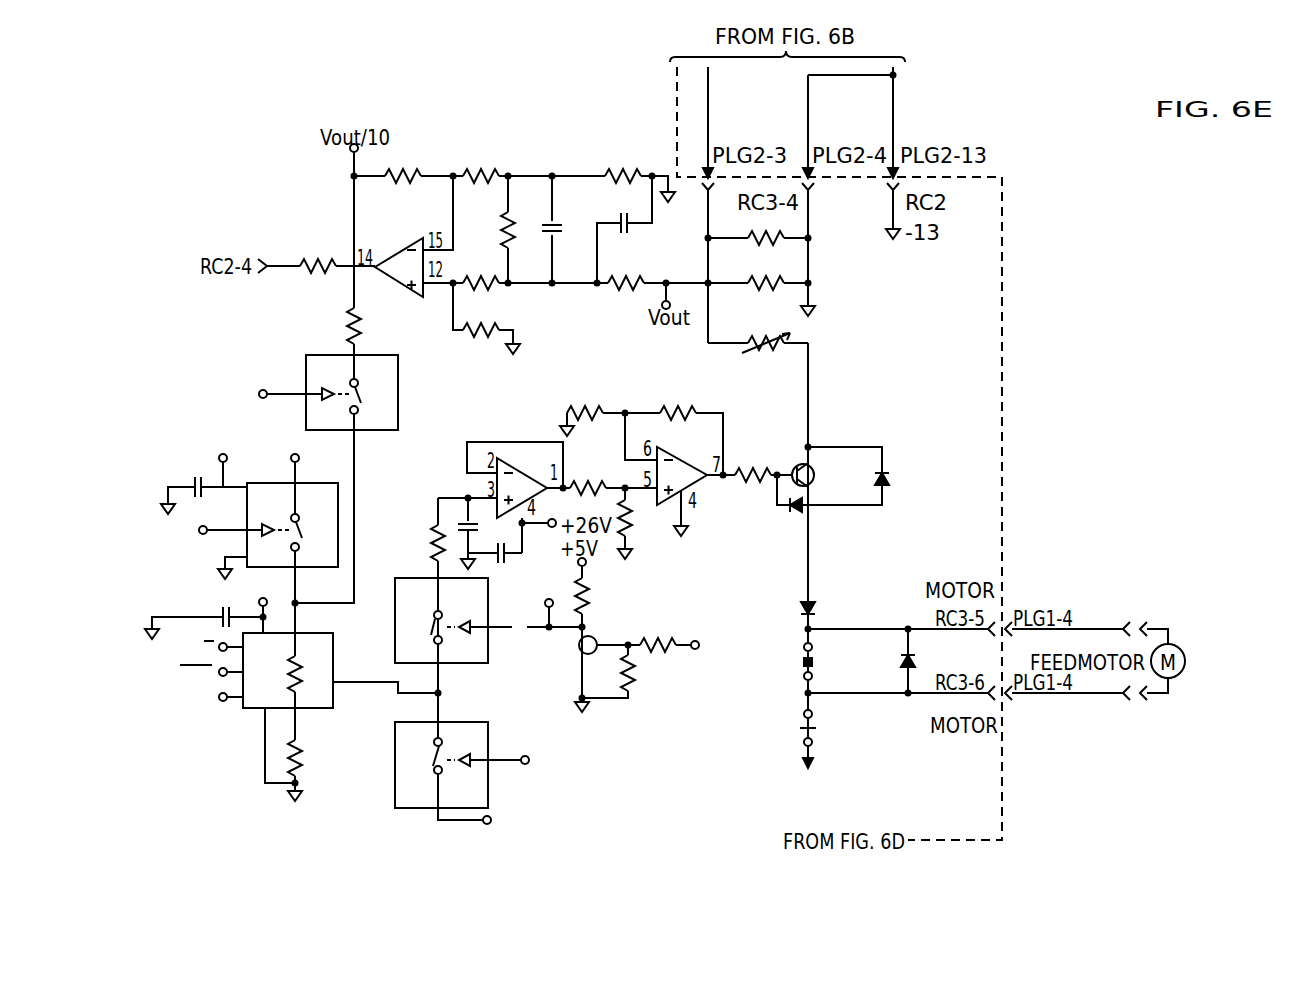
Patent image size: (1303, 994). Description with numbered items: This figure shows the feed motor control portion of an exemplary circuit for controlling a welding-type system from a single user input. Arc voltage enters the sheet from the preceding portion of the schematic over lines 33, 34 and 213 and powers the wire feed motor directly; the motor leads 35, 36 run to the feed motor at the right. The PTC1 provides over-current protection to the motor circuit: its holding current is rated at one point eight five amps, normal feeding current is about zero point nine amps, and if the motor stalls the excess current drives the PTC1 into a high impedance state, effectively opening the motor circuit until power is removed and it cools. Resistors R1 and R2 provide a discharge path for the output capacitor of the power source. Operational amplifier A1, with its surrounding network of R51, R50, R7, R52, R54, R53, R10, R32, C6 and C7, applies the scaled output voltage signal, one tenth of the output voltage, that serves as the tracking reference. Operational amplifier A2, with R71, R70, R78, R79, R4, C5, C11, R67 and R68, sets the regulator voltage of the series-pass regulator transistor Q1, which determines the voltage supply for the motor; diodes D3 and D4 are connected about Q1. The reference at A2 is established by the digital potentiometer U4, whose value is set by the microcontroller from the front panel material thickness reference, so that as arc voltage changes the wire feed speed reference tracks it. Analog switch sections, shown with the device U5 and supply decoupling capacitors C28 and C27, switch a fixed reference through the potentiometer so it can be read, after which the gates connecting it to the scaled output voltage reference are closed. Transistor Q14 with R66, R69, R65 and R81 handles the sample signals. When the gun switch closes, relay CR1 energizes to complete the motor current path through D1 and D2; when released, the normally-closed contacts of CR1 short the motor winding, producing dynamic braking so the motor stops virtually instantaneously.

The line 33 from FIG. 6B 33 is at (698, 122).
The line 34 from FIG. 6B 34 is at (836, 126).
The line 213 from FIG. 6B 213 is at (880, 122).
The feed motor lead 35 is at (1093, 625).
The feed motor lead 36 is at (1093, 704).
The resistor R51 is at (403, 164).
The resistor R50 is at (476, 164).
The resistor R7 is at (623, 164).
The resistor R52 is at (492, 229).
The capacitor C7 is at (566, 229).
The capacitor C6 is at (624, 229).
The resistor R10 is at (626, 271).
The resistor R54 is at (476, 295).
The resistor R53 is at (486, 322).
The resistor R32 is at (318, 255).
The resistor R68 is at (339, 326).
The operational amplifier A1 is at (461, 378).
The operational amplifier A2 is at (682, 491).
The capacitor C5 is at (481, 533).
The capacitor C11 is at (495, 555).
The resistor R71 is at (588, 480).
The resistor R70 is at (610, 412).
The resistor R78 is at (673, 432).
The resistor R79 is at (644, 523).
The resistor R4 is at (750, 467).
The series-pass regulator transistor Q1 is at (818, 477).
The diode D3 is at (896, 481).
The diode D4 is at (794, 521).
The diode D1 is at (823, 621).
The diode D2 is at (922, 661).
The relay CR1 is at (831, 705).
The resistor R1 is at (758, 230).
The resistor R2 is at (758, 275).
The PTC PTC1 is at (758, 335).
The digital potentiometer U4 is at (372, 595).
The digital potentiometer U5 is at (304, 701).
The capacitor C28 is at (204, 473).
The capacitor C27 is at (212, 610).
The resistor R81 is at (314, 763).
The resistor R67 is at (419, 529).
The resistor R66 is at (603, 632).
The transistor Q14 is at (584, 646).
The resistor R69 is at (704, 637).
The resistor R65 is at (625, 677).